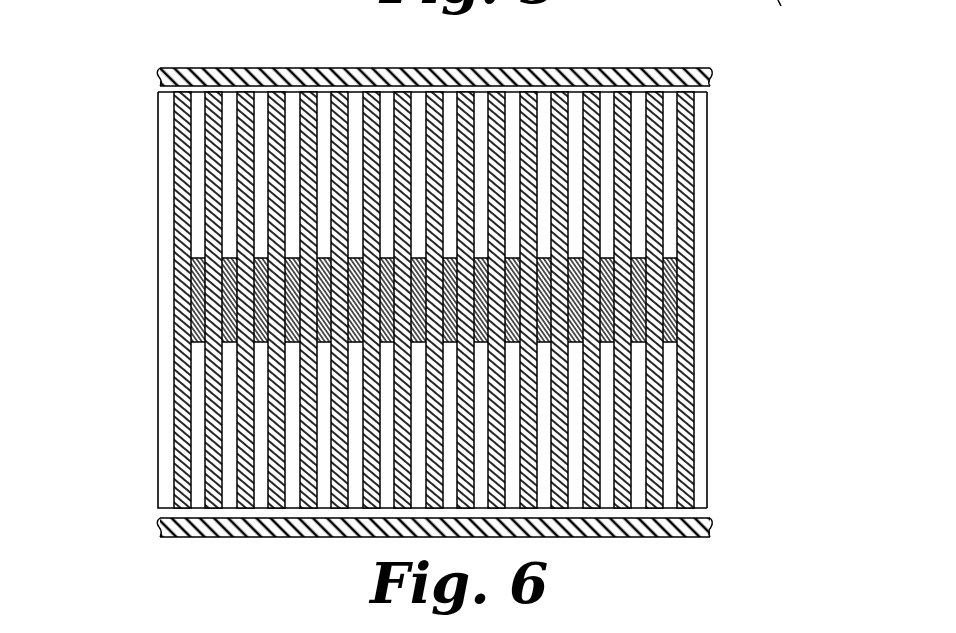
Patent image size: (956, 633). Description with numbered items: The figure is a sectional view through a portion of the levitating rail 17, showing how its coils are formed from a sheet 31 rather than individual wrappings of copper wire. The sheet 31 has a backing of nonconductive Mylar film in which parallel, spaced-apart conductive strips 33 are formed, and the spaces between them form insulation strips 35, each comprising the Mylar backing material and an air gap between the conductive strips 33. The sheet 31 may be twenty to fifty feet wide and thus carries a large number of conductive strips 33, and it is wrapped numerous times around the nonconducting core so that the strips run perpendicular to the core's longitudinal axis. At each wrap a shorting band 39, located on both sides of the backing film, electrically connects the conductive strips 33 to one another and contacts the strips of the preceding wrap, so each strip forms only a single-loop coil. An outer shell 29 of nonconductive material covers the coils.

The levitating rail 17 is at (762, 185).
The outer shell 29 is at (298, 69).
The sheet 31 is at (708, 342).
The conductive strips 33 is at (177, 178).
The insulation strips 35 is at (197, 96).
The shorting band 39 is at (190, 318).